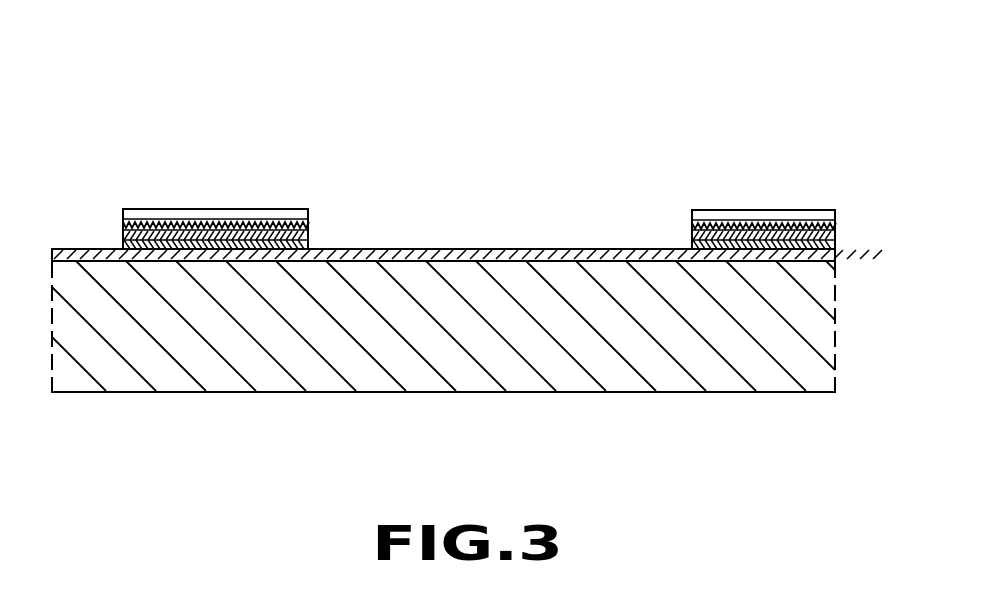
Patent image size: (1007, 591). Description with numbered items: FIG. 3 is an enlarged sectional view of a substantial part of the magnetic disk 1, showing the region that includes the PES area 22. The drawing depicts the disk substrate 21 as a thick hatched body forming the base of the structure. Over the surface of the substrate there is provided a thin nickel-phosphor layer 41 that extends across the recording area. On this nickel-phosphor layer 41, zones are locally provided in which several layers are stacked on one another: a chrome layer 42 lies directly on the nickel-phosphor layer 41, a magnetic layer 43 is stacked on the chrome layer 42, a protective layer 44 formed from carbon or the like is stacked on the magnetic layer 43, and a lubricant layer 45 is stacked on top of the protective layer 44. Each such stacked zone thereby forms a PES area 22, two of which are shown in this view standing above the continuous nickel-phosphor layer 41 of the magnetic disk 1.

The magnetic disk 1 is at (492, 124).
The substrate 21 is at (468, 374).
The PES area 22 is at (217, 128).
The nickel-phosphor layer 41 is at (432, 257).
The chrome layer 42 is at (143, 241).
The magnetic layer 43 is at (180, 236).
The protective layer 44 is at (245, 224).
The lubricant layer 45 is at (283, 210).